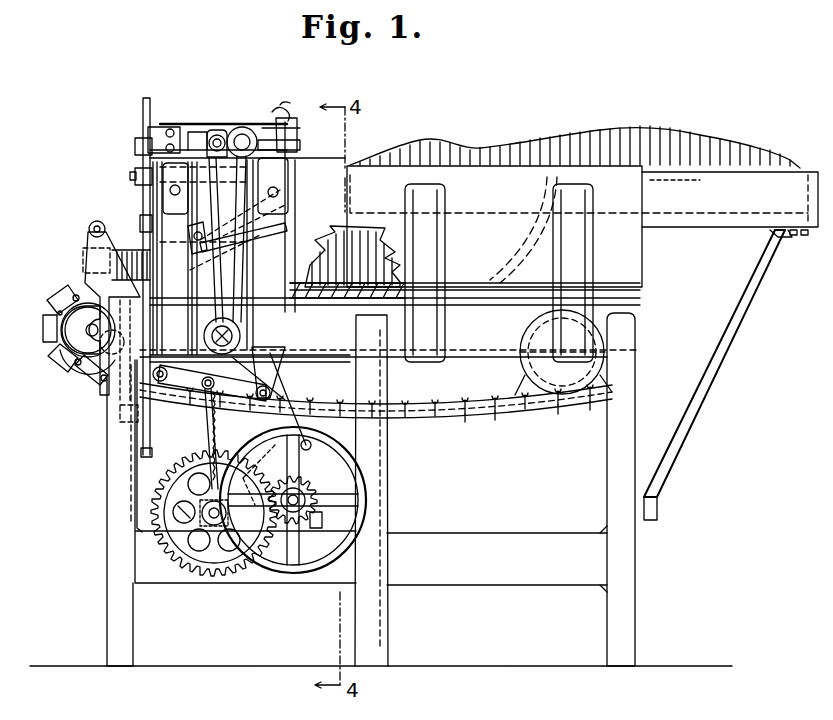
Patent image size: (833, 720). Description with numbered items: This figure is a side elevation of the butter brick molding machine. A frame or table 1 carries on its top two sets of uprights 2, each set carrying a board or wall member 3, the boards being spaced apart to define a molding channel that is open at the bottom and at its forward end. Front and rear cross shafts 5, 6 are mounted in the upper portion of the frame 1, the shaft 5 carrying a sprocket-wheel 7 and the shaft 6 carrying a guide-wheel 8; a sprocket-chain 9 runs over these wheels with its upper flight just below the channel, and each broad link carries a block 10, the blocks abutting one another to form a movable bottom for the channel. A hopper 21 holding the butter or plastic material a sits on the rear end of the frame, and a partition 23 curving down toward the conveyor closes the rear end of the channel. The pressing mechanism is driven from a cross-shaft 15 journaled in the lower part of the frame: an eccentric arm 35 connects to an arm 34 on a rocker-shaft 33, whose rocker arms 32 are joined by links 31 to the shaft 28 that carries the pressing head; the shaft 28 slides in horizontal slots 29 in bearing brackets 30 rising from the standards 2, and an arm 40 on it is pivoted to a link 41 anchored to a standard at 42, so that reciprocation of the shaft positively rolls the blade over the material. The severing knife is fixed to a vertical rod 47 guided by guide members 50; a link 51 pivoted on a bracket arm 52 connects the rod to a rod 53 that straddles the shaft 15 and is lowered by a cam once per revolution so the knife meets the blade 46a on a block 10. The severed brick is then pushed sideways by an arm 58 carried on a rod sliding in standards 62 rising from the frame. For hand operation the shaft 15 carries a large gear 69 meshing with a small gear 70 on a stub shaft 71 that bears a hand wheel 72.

The frame or table 1 is at (627, 405).
The uprights 2 is at (290, 208).
The board or wall member 3 is at (440, 168).
The butter or plastic material a is at (538, 152).
The hopper or receptacle 21 is at (714, 225).
The partition 23 is at (522, 240).
The vertical rod 47 is at (143, 120).
The guide members 50 is at (135, 148).
The bearing brackets 30 is at (195, 125).
The link 31 is at (227, 133).
The slots 29 is at (266, 134).
The shaft 28 is at (282, 136).
The arm 40 is at (280, 164).
The link 41 is at (275, 250).
The pivot 42 is at (247, 262).
The rocker arm 32 is at (217, 265).
The rocker-shaft 33 is at (234, 335).
The arm 58 is at (87, 253).
The slide 62 is at (105, 258).
The sprocket-wheel 7 is at (72, 327).
The cross shaft 5 is at (85, 333).
The link 51 is at (178, 370).
The bracket arm 52 is at (275, 365).
The arm 34 is at (276, 393).
The rod 53 is at (210, 432).
The sprocket-chain 9 is at (416, 405).
The block 10 is at (421, 418).
The blade 46a is at (494, 420).
The cross shaft 6 is at (556, 414).
The guide-wheel 8 is at (530, 376).
The large gear 69 is at (190, 465).
The cross-shaft 15 is at (214, 513).
The hand wheel 72 is at (360, 494).
The small gear 70 is at (304, 494).
The eccentric arm 35 is at (250, 480).
The stub shaft 71 is at (312, 515).